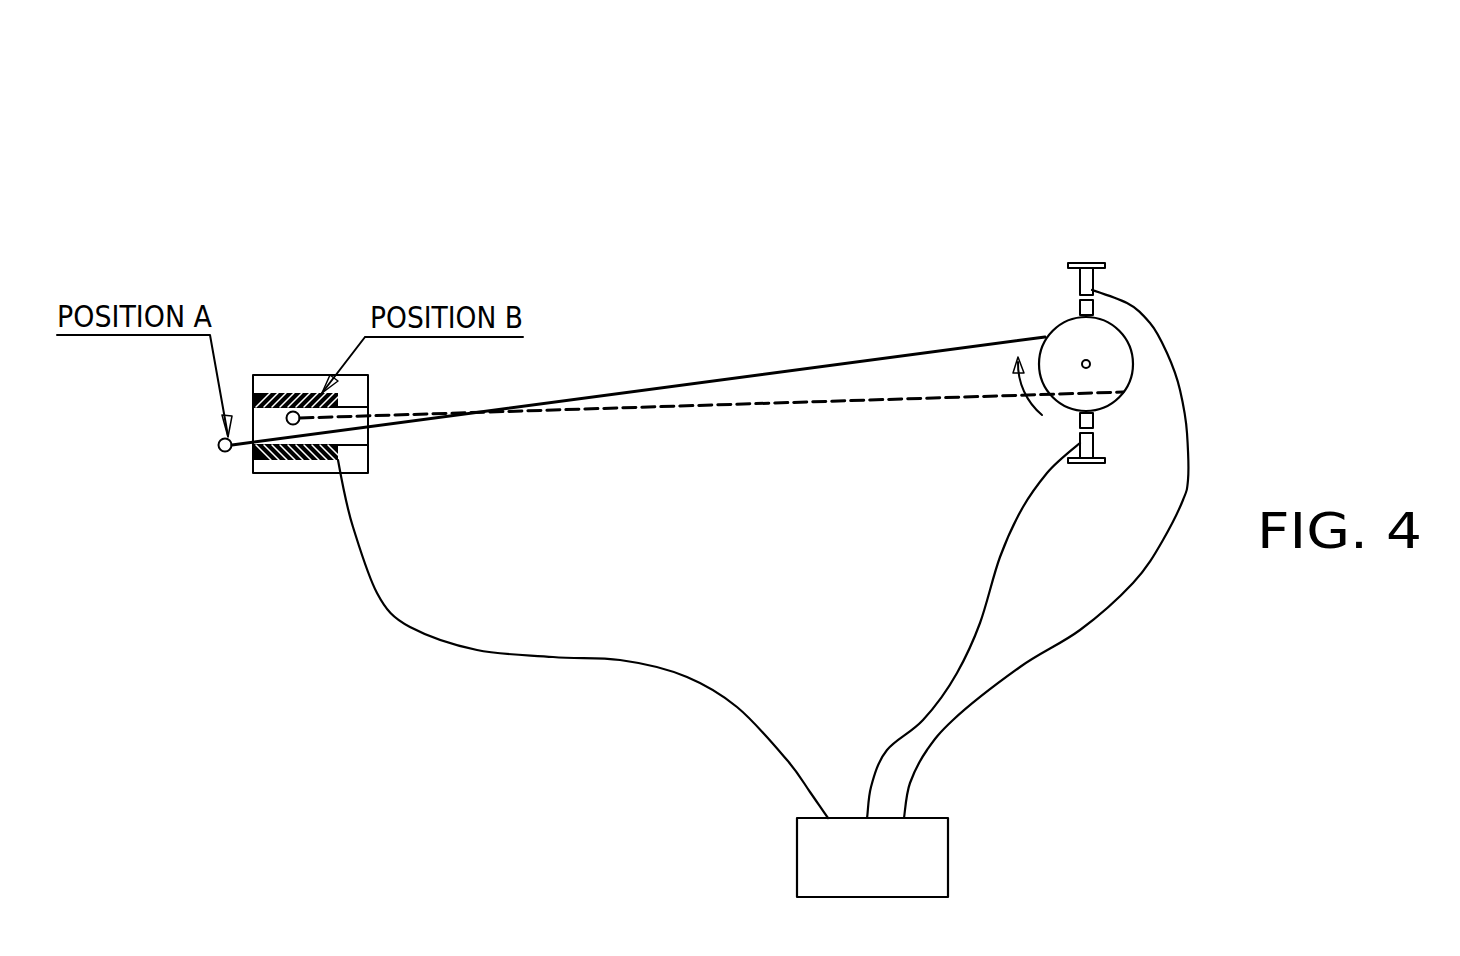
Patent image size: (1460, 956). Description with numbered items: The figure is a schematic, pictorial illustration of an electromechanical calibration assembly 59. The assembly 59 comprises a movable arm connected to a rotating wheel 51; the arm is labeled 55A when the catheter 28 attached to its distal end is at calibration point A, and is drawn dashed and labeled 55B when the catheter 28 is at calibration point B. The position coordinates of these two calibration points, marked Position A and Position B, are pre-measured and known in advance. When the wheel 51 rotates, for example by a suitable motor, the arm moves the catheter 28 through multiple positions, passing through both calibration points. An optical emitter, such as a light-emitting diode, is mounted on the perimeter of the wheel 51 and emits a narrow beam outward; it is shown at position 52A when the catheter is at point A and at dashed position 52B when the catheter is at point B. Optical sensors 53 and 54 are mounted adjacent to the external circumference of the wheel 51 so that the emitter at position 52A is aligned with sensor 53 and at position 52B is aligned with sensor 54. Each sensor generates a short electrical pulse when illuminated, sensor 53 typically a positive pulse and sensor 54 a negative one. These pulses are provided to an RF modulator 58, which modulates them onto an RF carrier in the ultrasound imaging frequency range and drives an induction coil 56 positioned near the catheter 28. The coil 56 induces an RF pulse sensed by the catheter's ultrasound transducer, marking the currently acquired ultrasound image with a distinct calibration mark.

The electromechanical assembly 59 is at (317, 178).
The induction coil 56 is at (278, 392).
The catheter 28 is at (312, 413).
The movable arm 55A is at (838, 363).
The movable arm 55B is at (893, 400).
The rotating wheel 51 is at (1125, 342).
The optical sensor 53 is at (1072, 272).
The optical emitter 52A is at (1079, 309).
The optical emitter 52B is at (1080, 420).
The optical sensor 54 is at (1094, 445).
The RF modulator 58 is at (948, 848).